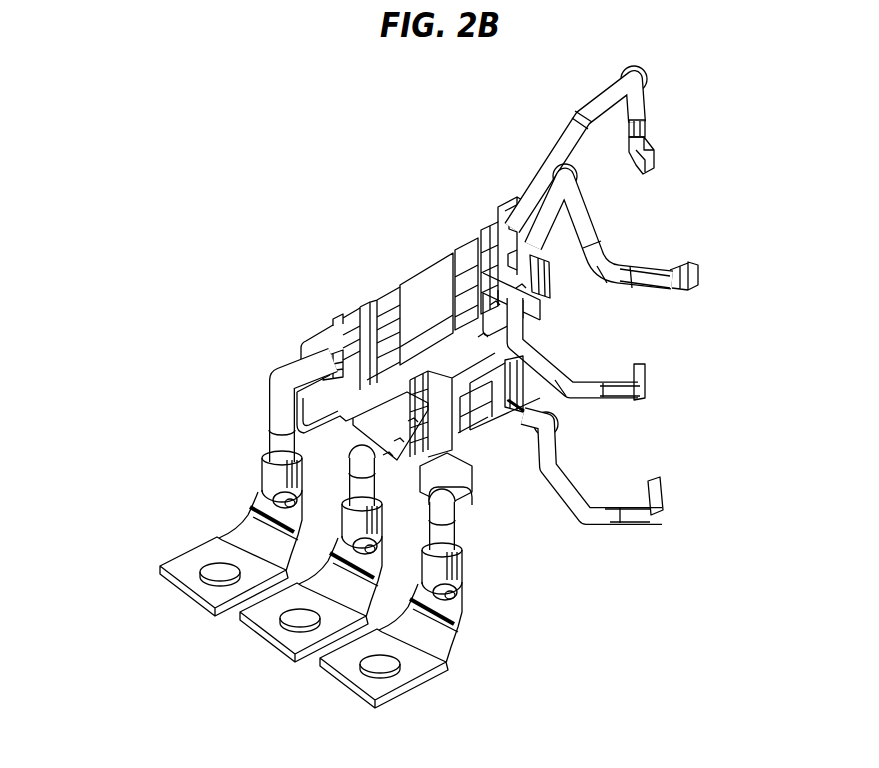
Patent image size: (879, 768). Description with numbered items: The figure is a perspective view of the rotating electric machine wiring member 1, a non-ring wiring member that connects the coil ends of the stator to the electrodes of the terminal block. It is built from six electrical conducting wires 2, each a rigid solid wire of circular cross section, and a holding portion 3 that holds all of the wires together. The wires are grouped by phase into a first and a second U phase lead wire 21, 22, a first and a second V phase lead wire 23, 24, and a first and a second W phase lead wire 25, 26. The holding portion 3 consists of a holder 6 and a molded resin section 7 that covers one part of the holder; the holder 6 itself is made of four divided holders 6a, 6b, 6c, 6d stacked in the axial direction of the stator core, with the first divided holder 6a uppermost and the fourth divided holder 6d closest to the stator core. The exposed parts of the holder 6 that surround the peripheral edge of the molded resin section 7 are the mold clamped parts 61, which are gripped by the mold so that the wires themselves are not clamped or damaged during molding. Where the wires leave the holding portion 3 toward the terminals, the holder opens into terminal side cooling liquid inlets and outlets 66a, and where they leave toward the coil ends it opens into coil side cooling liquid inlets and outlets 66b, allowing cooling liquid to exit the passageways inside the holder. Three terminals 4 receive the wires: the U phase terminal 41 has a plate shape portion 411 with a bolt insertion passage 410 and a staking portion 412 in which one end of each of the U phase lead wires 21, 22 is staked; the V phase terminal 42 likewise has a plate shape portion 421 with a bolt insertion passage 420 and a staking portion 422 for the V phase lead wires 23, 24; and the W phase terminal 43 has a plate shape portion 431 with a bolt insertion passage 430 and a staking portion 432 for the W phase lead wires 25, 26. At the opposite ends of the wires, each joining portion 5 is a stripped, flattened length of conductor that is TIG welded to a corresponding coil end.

The rotating electric machine wiring member 1 is at (257, 135).
The electrical conducting wire 2 is at (258, 367).
The holding portion 3 is at (281, 345).
The terminal 4 is at (121, 554).
The joining portion 5 is at (697, 262).
The holder 6 is at (320, 207).
The first divided holder 6a is at (387, 310).
The second divided holder 6b is at (387, 323).
The third divided holder 6c is at (387, 337).
The fourth divided holder 6d is at (387, 357).
The molded resin section 7 is at (427, 278).
The first U phase lead wire 21 is at (603, 520).
The second U phase lead wire 22 is at (547, 294).
The first V phase lead wire 23 is at (577, 395).
The second V phase lead wire 24 is at (600, 100).
The first W phase lead wire 25 is at (518, 377).
The second W phase lead wire 26 is at (558, 173).
The U phase terminal 41 is at (399, 639).
The V phase terminal 42 is at (289, 594).
The W phase terminal 43 is at (211, 543).
The mold clamped part 61 is at (343, 329).
The terminal side cooling liquid inlet and outlet 66a is at (325, 362).
The coil side cooling liquid inlet and outlet 66b is at (507, 242).
The bolt insertion passage 410 is at (343, 695).
The plate shape portion 411 is at (369, 648).
The staking portion 412 is at (472, 573).
The bolt insertion passage 420 is at (263, 650).
The plate shape portion 421 is at (180, 581).
The staking portion 422 is at (337, 525).
The bolt insertion passage 430 is at (210, 587).
The plate shape portion 431 is at (182, 583).
The staking portion 432 is at (267, 467).